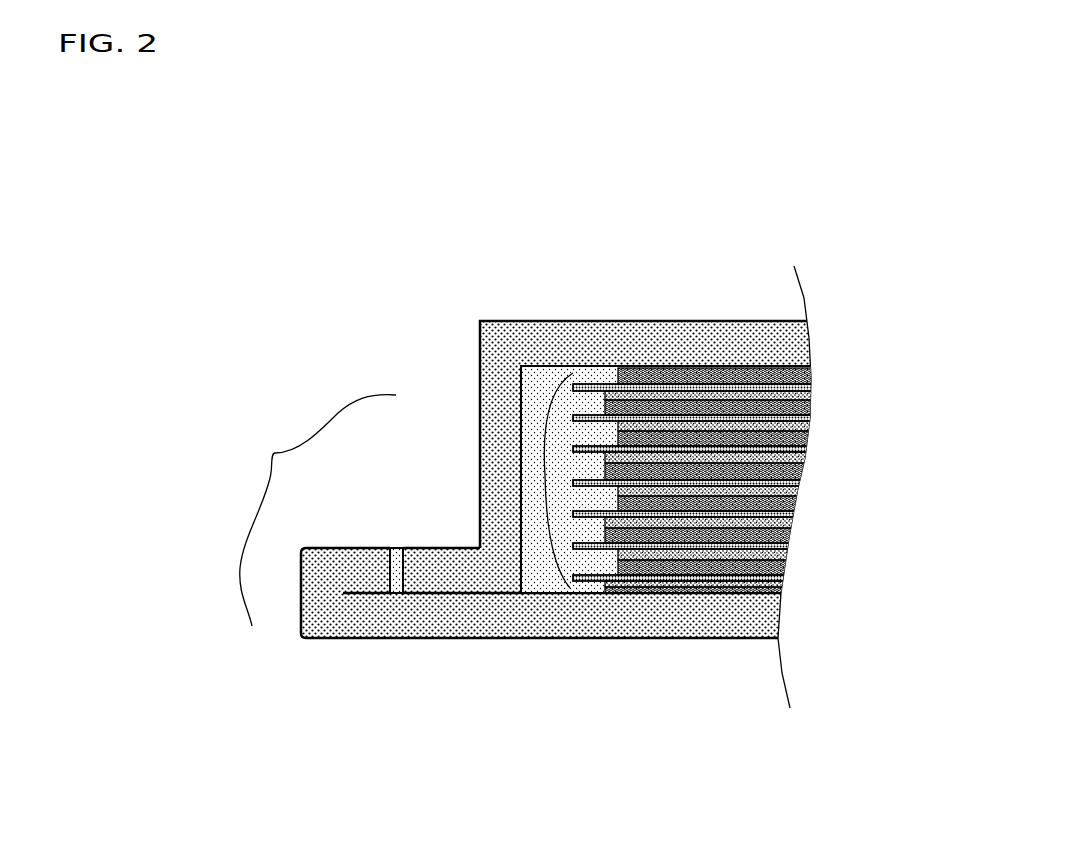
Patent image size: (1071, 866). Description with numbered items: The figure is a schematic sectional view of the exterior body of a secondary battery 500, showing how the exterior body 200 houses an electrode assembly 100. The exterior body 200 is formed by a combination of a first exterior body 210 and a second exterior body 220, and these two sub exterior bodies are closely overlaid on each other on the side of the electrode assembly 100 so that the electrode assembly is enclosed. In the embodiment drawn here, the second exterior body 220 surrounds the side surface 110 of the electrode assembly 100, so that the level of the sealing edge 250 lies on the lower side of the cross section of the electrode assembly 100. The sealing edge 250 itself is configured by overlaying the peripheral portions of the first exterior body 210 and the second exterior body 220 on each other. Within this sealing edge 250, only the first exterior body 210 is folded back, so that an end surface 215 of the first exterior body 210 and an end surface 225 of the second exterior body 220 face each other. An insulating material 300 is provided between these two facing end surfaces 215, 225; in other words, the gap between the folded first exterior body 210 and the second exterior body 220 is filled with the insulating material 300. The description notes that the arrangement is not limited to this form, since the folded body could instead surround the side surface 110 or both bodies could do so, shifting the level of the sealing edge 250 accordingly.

The secondary battery 500 is at (263, 268).
The electrode assembly 100 is at (804, 456).
The side surface 110 is at (531, 444).
The exterior body 200 is at (564, 479).
The first exterior body 210 is at (327, 617).
The second exterior body 220 is at (486, 400).
The end surface 215 is at (374, 566).
The end surface 225 is at (403, 566).
The insulating material 300 is at (388, 543).
The sealing edge 250 is at (304, 510).